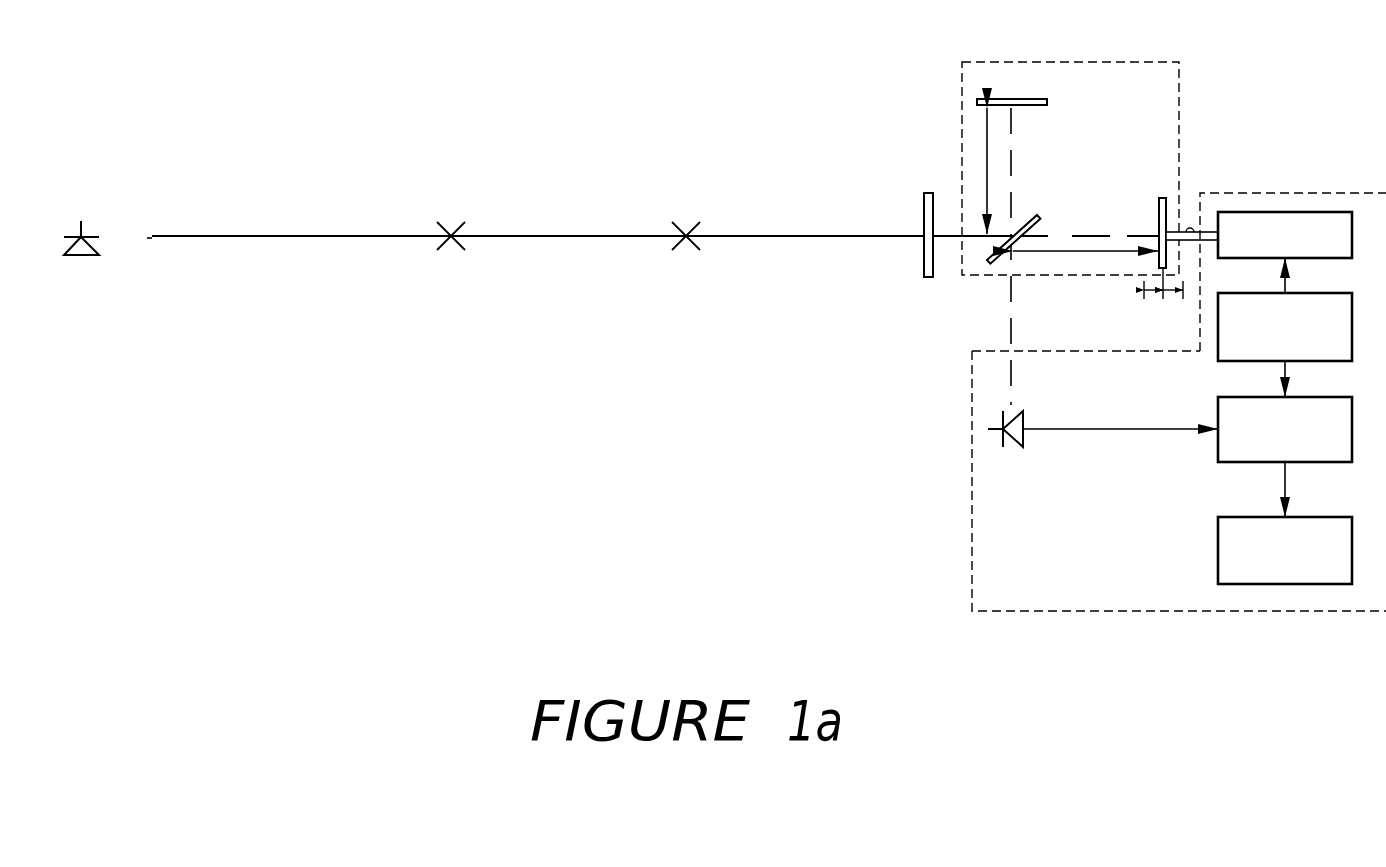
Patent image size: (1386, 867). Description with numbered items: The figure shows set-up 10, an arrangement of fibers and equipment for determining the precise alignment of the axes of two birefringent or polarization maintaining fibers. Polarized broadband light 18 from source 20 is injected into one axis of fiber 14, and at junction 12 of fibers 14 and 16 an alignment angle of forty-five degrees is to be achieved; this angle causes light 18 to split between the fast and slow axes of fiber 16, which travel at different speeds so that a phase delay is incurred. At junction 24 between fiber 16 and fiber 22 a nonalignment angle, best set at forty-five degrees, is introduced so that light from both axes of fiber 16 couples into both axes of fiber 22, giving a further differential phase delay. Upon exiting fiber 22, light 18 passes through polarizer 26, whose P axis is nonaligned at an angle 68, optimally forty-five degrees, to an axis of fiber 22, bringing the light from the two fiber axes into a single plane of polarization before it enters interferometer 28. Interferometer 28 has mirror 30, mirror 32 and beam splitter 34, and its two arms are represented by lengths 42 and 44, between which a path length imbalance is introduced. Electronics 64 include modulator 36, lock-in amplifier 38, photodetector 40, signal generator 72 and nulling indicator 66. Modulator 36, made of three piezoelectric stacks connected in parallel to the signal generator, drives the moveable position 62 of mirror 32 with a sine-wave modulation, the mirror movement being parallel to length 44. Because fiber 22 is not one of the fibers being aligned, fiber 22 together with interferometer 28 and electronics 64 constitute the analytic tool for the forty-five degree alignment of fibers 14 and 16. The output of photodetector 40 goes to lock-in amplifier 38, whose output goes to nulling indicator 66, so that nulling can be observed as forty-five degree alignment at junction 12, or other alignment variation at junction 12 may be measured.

The set-up 10 is at (748, 418).
The junction 12 is at (452, 222).
The fiber 14 is at (227, 235).
The fiber 16 is at (556, 234).
The polarized broadband light 18 is at (147, 238).
The source 20 is at (79, 257).
The fiber 22 is at (777, 234).
The junction 24 is at (690, 223).
The polarizer 26 is at (929, 192).
The interferometer 28 is at (1117, 62).
The mirror 30 is at (1047, 102).
The mirror 32 is at (1163, 197).
The beam splitter 34 is at (1035, 216).
The modulator 36 is at (1240, 212).
The lock-in amplifier 38 is at (1218, 410).
The photodetector 40 is at (1015, 448).
The length 42 is at (984, 143).
The length 44 is at (1077, 256).
The moveable position 62 is at (1174, 300).
The electronics 64 is at (1083, 612).
The nulling indicator 66 is at (1218, 549).
The angle 68 is at (921, 237).
The signal generator 72 is at (1352, 313).